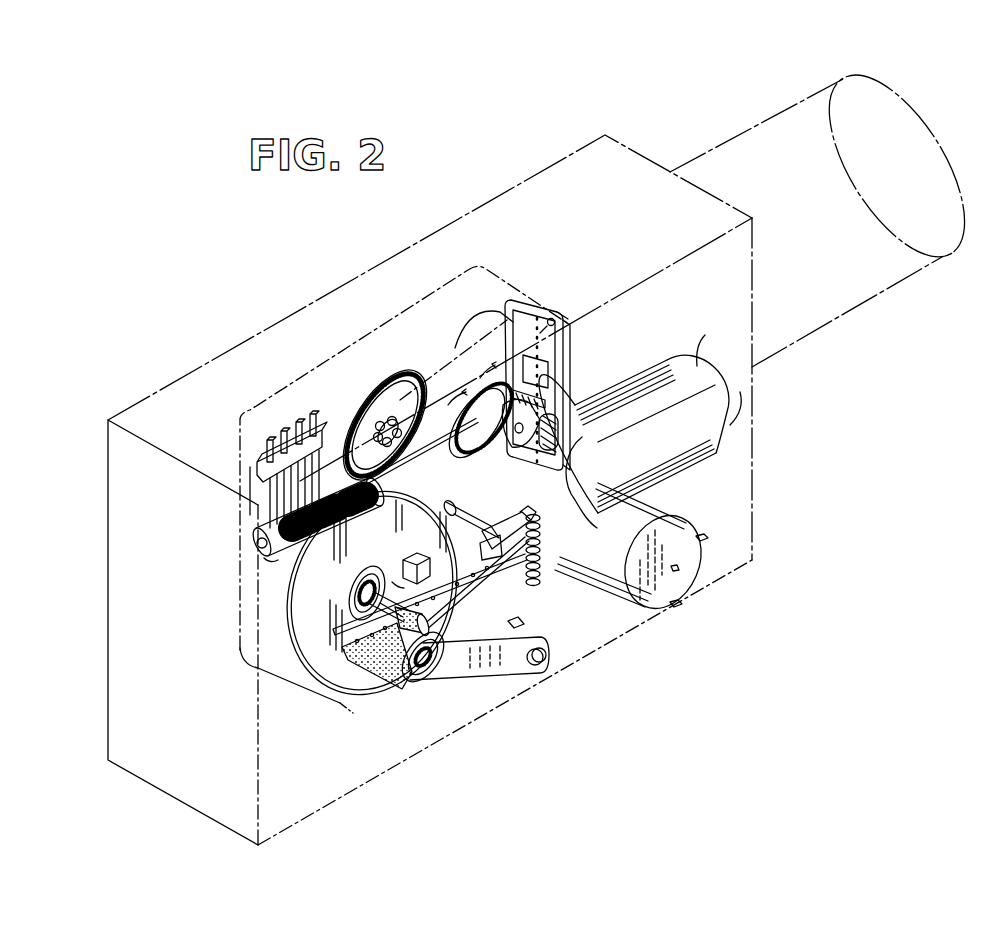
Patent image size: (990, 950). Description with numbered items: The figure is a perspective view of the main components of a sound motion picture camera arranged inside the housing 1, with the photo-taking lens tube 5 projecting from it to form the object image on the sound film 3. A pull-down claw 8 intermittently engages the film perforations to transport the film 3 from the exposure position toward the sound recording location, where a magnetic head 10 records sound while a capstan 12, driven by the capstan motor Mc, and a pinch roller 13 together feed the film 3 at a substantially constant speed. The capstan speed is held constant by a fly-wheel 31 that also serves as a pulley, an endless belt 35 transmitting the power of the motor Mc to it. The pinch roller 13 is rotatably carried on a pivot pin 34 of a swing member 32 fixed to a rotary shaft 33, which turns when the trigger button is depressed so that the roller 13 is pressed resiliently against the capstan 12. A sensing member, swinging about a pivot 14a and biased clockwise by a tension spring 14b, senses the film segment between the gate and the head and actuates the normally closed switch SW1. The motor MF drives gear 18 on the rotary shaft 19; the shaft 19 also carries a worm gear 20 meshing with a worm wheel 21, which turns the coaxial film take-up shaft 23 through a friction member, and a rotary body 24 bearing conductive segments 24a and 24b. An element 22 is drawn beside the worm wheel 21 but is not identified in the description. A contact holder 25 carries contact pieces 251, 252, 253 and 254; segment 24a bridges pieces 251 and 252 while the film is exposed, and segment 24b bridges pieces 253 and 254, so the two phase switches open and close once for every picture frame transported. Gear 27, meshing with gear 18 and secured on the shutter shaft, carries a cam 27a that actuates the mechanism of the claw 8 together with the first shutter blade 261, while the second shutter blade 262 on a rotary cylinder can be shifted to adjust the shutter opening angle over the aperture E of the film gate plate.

The housing 1 is at (610, 195).
The photo-taking lens tube 5 is at (746, 154).
The sound film 3 is at (358, 652).
The pull-down claw 8 is at (551, 322).
The magnetic head 10 is at (417, 555).
The capstan 12 is at (397, 582).
The pinch roller 13 is at (383, 666).
The pivot 14a is at (468, 600).
The tension spring 14b is at (538, 586).
The gear 18 is at (456, 398).
The rotary shaft 19 is at (257, 547).
The worm gear 20 is at (268, 502).
The worm wheel 21 is at (380, 420).
The gear 22 is at (397, 398).
The film take-up shaft 23 is at (347, 470).
The rotary body 24 is at (257, 533).
The conductive segment 24a is at (266, 561).
The conductive segment 24b is at (367, 578).
The contact holder 25 is at (257, 468).
The conductive contact piece 251 is at (268, 446).
The conductive contact piece 252 is at (283, 440).
The conductive contact piece 253 is at (298, 430).
The conductive contact piece 254 is at (313, 425).
The first shutter blade 261 is at (492, 346).
The second shutter blade 262 is at (583, 486).
The gear 27 is at (561, 435).
The cam 27a is at (586, 368).
The fly-wheel 31 is at (320, 665).
The swing member 32 is at (487, 676).
The rotary shaft 33 is at (535, 668).
The pivot pin 34 is at (423, 681).
The endless belt 35 is at (511, 624).
The aperture E is at (547, 375).
The normally closed switch SW1 is at (463, 503).
The motor MF is at (674, 424).
The capstan motor Mc is at (645, 543).